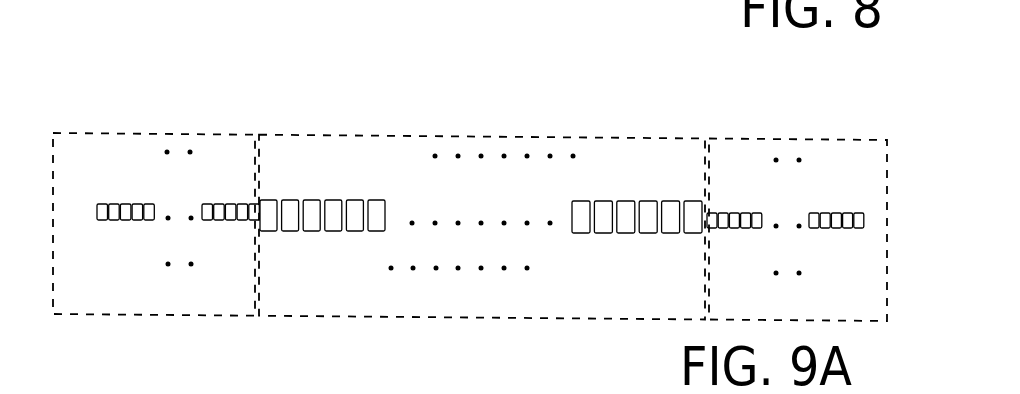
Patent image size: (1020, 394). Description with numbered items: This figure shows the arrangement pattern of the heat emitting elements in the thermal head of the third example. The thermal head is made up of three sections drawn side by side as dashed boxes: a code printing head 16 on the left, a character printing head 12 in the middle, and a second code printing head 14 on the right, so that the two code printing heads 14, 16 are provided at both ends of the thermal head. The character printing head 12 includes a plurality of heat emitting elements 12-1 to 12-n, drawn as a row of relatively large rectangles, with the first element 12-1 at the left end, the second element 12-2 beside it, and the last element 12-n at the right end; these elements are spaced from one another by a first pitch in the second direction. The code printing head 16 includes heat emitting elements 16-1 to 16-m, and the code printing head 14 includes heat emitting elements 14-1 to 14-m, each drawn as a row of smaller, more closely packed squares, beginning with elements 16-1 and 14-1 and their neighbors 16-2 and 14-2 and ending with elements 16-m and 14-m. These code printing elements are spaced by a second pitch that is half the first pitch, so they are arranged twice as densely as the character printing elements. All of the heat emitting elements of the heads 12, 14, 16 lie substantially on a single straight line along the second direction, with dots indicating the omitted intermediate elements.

The character printing head 12 is at (296, 132).
The code printing head 14 is at (735, 138).
The code printing head 16 is at (120, 133).
The heat emitting element 12-1 is at (265, 232).
The heat emitting element 12-2 is at (292, 199).
The heat emitting element 12-n is at (693, 200).
The heat emitting element 14-1 is at (712, 229).
The heat emitting element 14-2 is at (723, 212).
The heat emitting element 14-m is at (860, 212).
The heat emitting element 16-1 is at (104, 221).
The heat emitting element 16-2 is at (113, 203).
The heat emitting element 16-m is at (253, 203).